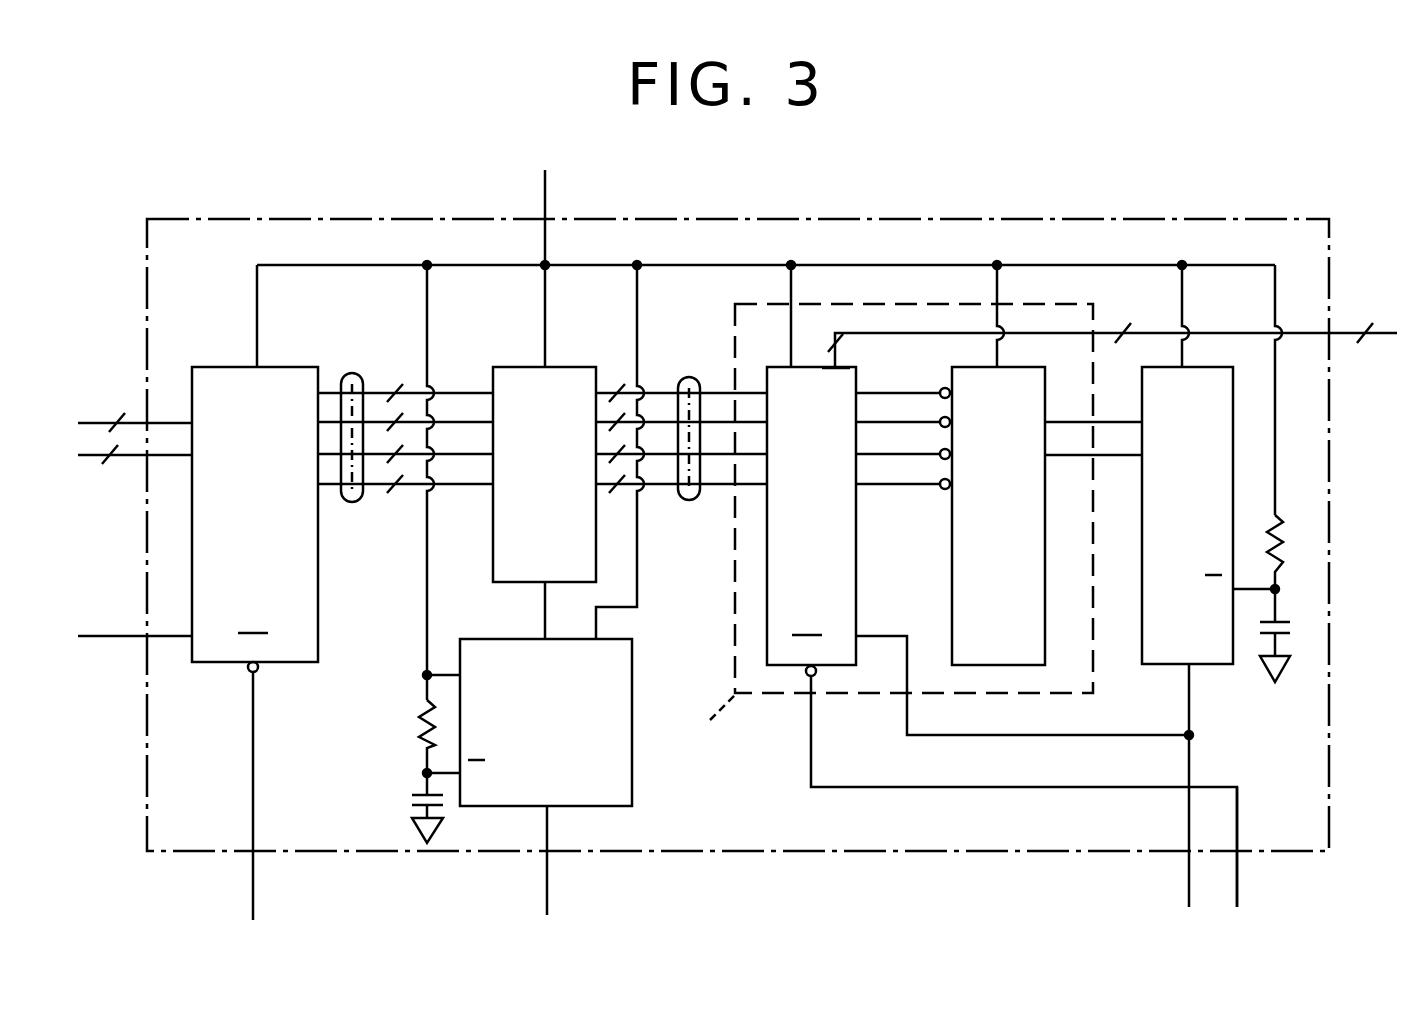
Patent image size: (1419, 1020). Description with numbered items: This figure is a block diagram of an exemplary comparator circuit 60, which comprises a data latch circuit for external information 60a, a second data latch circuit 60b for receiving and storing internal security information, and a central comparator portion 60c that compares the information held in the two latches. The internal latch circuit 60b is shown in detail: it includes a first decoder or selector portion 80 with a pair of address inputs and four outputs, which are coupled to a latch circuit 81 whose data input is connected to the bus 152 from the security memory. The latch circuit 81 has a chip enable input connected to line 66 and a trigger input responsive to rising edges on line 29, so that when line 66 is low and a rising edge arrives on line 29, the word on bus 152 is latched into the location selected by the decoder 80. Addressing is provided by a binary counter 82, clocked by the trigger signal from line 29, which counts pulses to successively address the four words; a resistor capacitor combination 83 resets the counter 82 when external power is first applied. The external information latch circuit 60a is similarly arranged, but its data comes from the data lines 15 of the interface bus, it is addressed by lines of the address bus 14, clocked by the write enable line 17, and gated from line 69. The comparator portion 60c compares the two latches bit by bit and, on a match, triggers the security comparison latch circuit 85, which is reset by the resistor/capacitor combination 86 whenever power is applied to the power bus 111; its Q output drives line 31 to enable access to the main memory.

The comparator circuit 60 is at (1172, 213).
The data latch circuit for external information 60a is at (230, 362).
The second data latch circuit 60b is at (1045, 300).
The central comparator portion 60c is at (520, 364).
The power bus 111 is at (545, 193).
The bus 152 is at (1335, 333).
The address bus 14 is at (108, 423).
The data lines 15 is at (100, 456).
The write enable line 17 is at (120, 640).
The line 69 is at (254, 900).
The line 31 is at (547, 888).
The security comparison latch circuit 85 is at (607, 636).
The resistor/capacitor combination 86 is at (425, 728).
The latch circuit 81 is at (856, 543).
The first decoder or selector portion 80 is at (952, 593).
The binary counter 82 is at (1160, 665).
The resistor capacitor combination 83 is at (1285, 530).
The line 29 is at (1189, 895).
The line 66 is at (1237, 890).